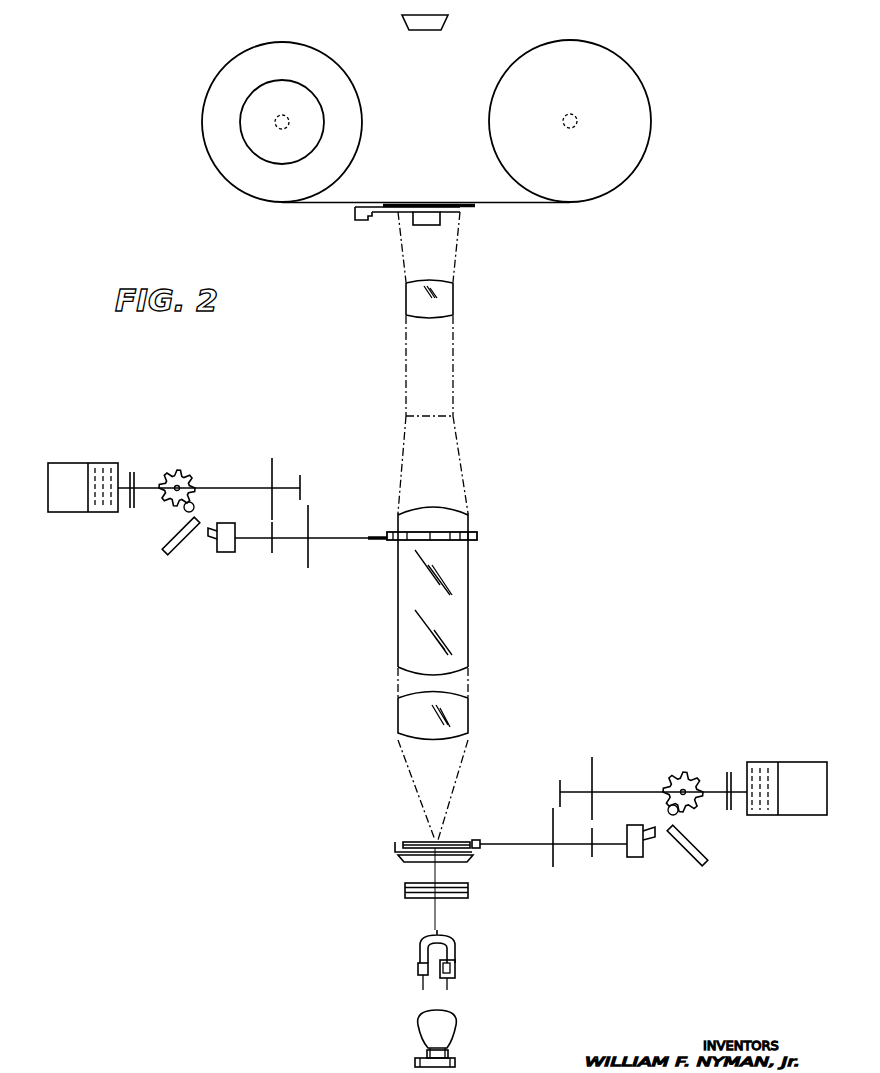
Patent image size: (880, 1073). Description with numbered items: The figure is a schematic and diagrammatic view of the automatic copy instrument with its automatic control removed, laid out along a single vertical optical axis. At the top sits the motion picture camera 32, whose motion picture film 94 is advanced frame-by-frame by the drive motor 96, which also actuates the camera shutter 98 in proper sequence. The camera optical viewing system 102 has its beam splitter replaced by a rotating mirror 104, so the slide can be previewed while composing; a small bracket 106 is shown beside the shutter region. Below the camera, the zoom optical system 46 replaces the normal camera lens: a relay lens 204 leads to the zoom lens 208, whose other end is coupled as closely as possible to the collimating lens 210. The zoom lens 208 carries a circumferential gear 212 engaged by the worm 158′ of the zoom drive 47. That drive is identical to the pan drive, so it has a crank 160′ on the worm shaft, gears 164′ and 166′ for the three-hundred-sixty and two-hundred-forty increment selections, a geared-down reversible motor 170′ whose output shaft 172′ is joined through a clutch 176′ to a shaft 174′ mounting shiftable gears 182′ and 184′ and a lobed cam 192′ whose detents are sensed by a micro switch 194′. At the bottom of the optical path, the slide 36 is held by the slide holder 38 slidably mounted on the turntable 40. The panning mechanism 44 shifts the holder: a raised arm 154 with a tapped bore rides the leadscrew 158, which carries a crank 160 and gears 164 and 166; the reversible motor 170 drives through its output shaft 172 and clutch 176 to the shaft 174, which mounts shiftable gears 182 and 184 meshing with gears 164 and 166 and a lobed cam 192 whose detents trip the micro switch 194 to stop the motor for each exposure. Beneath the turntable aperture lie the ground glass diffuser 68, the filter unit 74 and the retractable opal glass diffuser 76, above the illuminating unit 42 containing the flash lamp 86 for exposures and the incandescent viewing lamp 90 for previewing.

The camera optical viewing system 102 is at (449, 22).
The camera 32 is at (652, 106).
The drive motor 96 is at (247, 135).
The motion picture film 94 is at (340, 201).
The camera shutter 98 is at (476, 207).
The bracket 106 is at (366, 222).
The rotating mirror 104 is at (435, 225).
The relay lens 204 is at (410, 304).
The zoom optical system 46 is at (394, 608).
The zoom lens 208 is at (410, 639).
The gear 212 is at (477, 539).
The worm 158′ is at (376, 533).
The collimating lens 210 is at (408, 715).
The zoom drive 47 is at (70, 463).
The reversible motor of zoom drive 170′ is at (76, 505).
The motor output shaft of zoom drive 172′ is at (127, 492).
The clutch of zoom drive 176′ is at (135, 478).
The shaft of zoom drive 174′ is at (148, 488).
The lobed cam of zoom drive 192′ is at (192, 477).
The shiftable gear of zoom drive 184′ is at (274, 469).
The shiftable gear of zoom drive 182′ is at (302, 482).
The crank of zoom drive 160′ is at (226, 549).
The micro switch of zoom drive 194′ is at (172, 558).
The gear of zoom drive 166′ is at (270, 545).
The gear of zoom drive 164′ is at (310, 550).
The panning mechanism 44 is at (791, 762).
The reversible motor 170 is at (811, 812).
The motor output shaft 172 is at (739, 796).
The clutch 176 is at (727, 772).
The shaft 174 is at (712, 792).
The lobed cam 192 is at (676, 774).
The shiftable gear 184 is at (594, 770).
The shiftable gear 182 is at (559, 790).
The gear 164 is at (552, 865).
The gear 166 is at (591, 858).
The crank 160 is at (634, 858).
The micro switch 194 is at (684, 861).
The slide 36 is at (408, 840).
The raised arm 154 is at (482, 843).
The leadscrew 158 is at (508, 846).
The slide holder 38 is at (393, 851).
The turntable 40 is at (400, 862).
The ground glass diffuser 68 is at (408, 883).
The filter unit 74 is at (406, 890).
The opal glass diffuser 76 is at (420, 898).
The illuminating unit 42 is at (410, 1002).
The flash lamp 86 is at (455, 947).
The viewing lamp 90 is at (448, 1022).